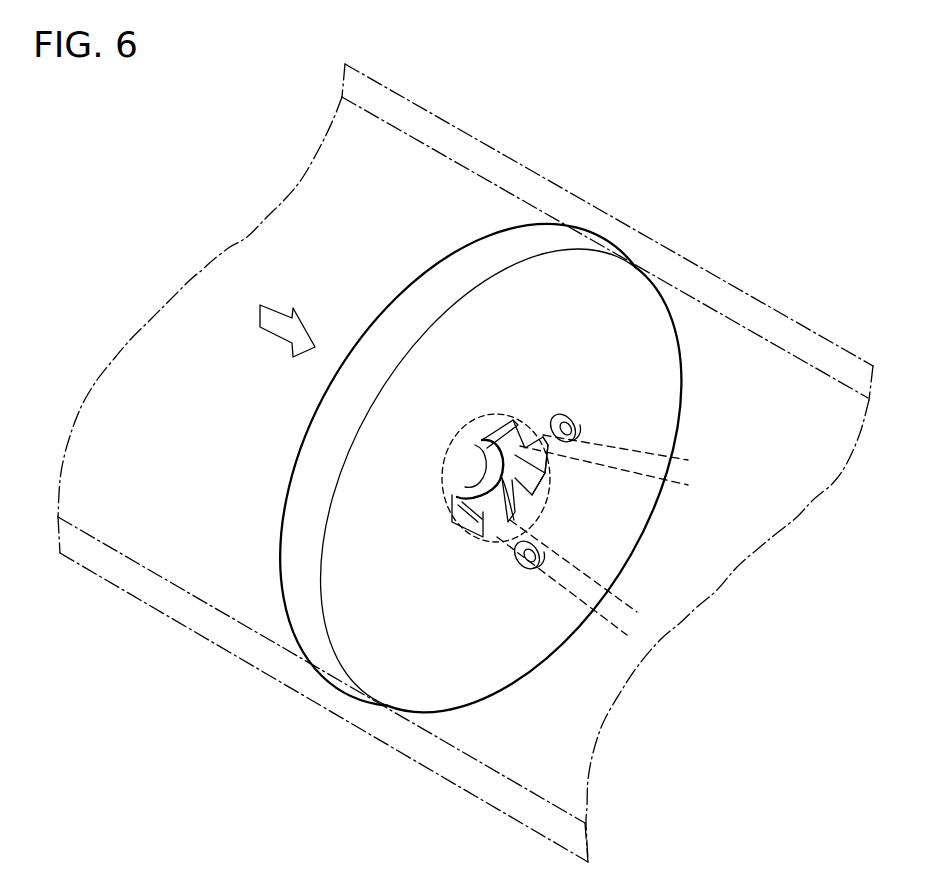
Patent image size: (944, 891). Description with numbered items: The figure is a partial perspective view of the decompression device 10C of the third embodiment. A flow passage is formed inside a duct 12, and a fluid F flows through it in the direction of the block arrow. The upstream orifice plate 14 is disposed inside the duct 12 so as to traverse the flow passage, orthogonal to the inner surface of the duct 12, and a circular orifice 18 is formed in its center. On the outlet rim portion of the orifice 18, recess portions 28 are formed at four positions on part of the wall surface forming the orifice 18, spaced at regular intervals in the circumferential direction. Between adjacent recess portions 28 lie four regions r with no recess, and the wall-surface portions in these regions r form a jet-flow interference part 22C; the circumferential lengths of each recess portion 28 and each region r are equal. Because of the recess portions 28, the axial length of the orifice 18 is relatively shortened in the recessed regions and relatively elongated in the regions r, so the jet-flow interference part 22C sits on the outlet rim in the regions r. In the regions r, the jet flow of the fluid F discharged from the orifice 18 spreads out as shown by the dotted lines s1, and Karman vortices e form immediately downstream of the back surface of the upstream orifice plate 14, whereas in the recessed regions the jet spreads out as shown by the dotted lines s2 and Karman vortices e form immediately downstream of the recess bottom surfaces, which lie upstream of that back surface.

The decompression device 10C is at (510, 409).
The duct 12 is at (453, 126).
The upstream orifice plate 14 is at (440, 262).
The orifice 18 is at (513, 477).
The jet-flow interference part 22C is at (480, 510).
The recess portions 28 is at (543, 468).
The dotted lines s1 is at (676, 484).
The dotted lines s2 is at (677, 458).
The Karman vortices e is at (573, 418).
The regions r is at (470, 460).
The fluid F is at (280, 312).